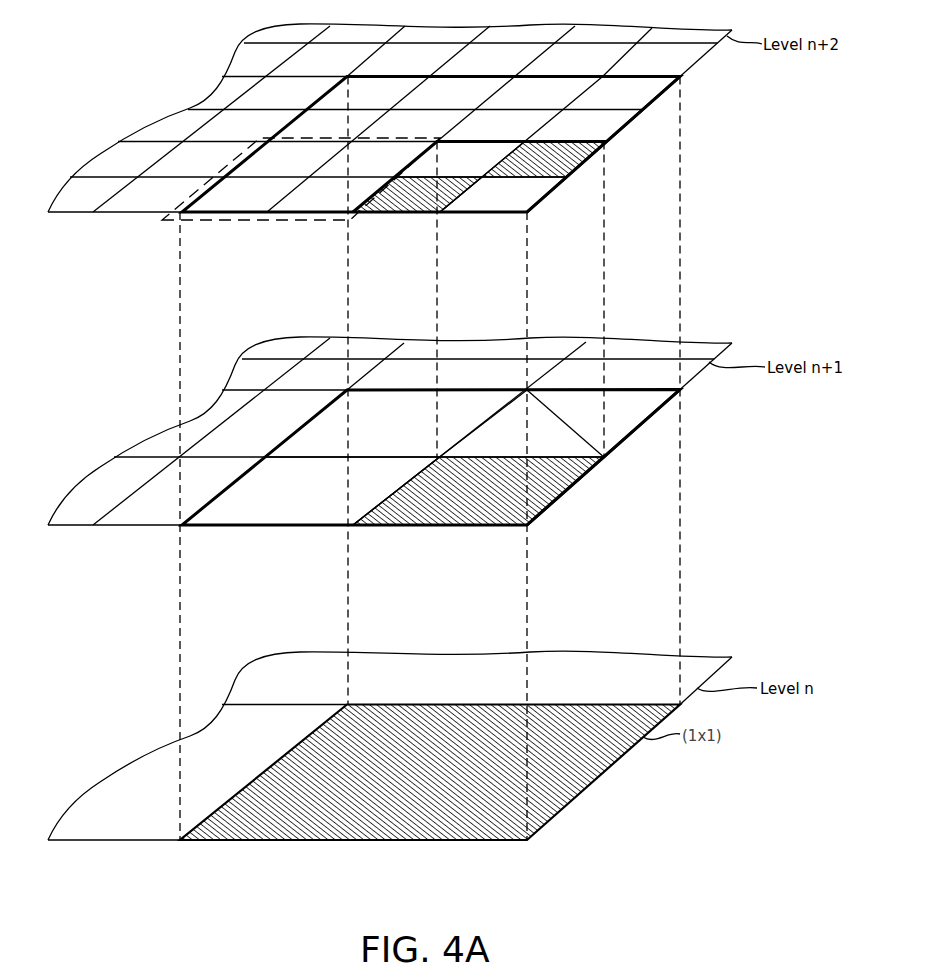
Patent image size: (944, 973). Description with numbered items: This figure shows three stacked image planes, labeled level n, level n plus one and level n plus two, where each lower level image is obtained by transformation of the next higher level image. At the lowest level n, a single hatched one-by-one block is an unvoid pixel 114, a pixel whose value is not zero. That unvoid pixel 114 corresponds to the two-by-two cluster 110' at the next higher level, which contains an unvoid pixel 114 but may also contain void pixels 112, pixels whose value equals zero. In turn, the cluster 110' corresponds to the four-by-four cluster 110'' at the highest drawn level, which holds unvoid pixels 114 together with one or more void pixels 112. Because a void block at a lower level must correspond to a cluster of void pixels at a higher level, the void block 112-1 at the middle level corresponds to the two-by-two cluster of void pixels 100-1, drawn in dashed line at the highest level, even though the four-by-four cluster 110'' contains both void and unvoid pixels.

The cluster of void pixels 100-1 is at (257, 223).
The four-by-four cluster 110'' is at (483, 145).
The two-by-two cluster 110' is at (477, 458).
The void pixel 112 is at (492, 203).
The void block 112-1 is at (280, 512).
The unvoid pixel 114 is at (410, 203).